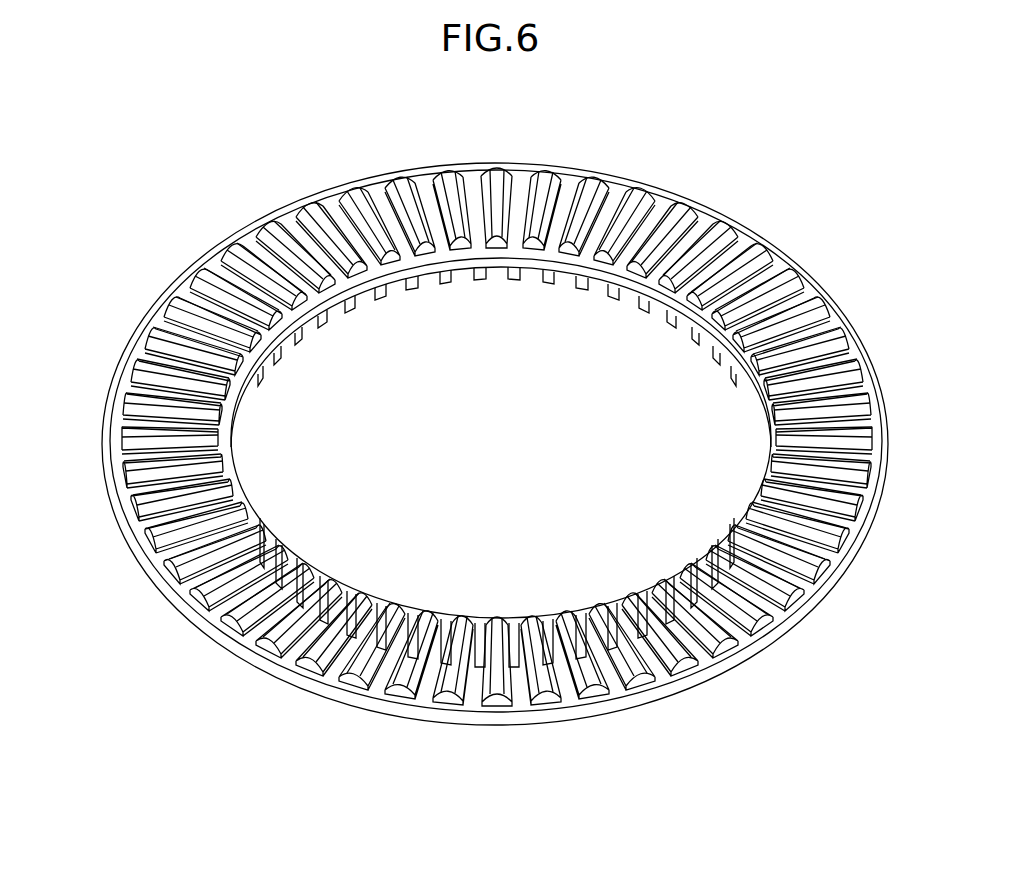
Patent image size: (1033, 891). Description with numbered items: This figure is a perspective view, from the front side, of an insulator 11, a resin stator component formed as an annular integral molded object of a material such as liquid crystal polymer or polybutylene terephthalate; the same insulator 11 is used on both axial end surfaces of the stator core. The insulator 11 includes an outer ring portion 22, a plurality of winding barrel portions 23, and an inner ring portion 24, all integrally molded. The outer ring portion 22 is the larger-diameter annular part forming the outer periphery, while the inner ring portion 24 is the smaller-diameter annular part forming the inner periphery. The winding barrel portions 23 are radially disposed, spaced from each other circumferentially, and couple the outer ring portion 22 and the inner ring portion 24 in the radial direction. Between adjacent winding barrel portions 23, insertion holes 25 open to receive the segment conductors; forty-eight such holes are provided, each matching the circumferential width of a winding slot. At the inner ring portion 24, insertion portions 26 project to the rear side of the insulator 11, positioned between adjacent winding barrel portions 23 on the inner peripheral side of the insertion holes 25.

The insulator 11 is at (228, 150).
The outer ring portion 22 is at (103, 480).
The winding barrel portions 23 is at (448, 180).
The inner ring portion 24 is at (236, 429).
The insertion holes 25 is at (518, 200).
The insertion portions 26 is at (408, 288).